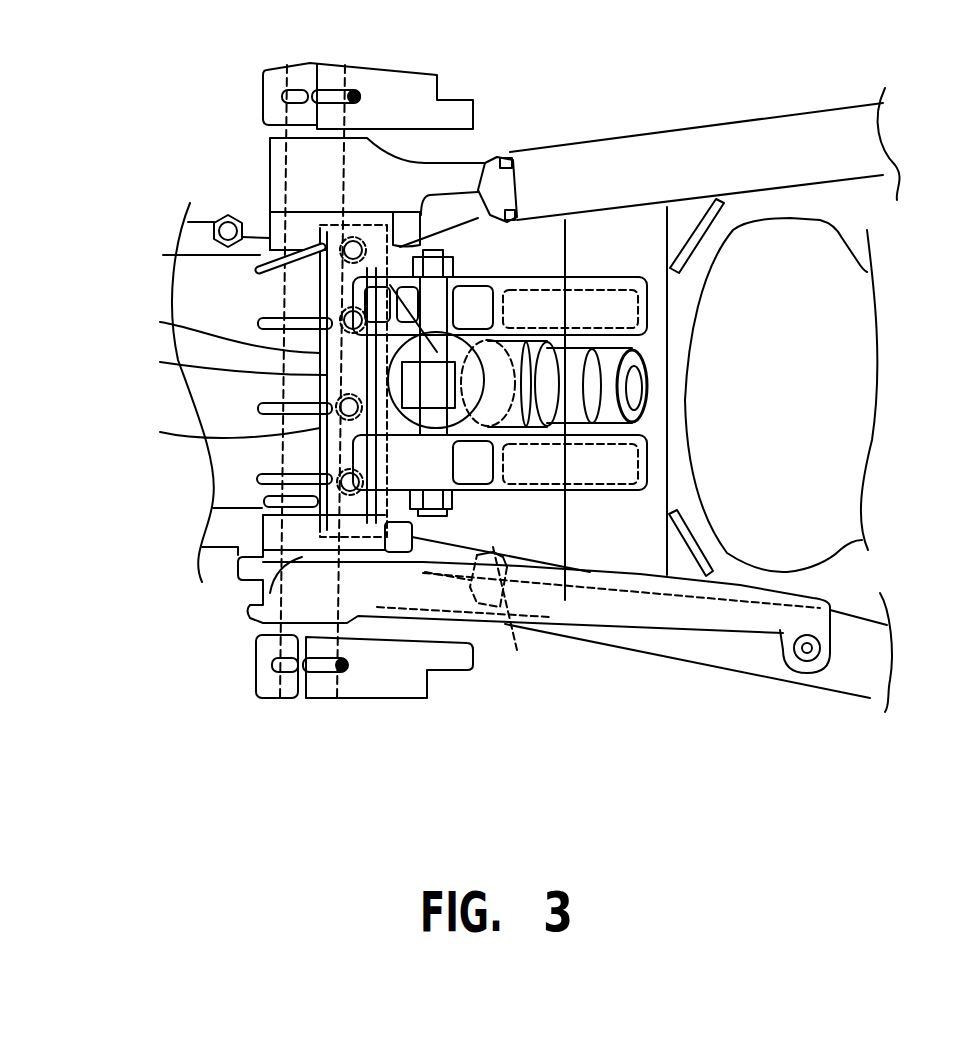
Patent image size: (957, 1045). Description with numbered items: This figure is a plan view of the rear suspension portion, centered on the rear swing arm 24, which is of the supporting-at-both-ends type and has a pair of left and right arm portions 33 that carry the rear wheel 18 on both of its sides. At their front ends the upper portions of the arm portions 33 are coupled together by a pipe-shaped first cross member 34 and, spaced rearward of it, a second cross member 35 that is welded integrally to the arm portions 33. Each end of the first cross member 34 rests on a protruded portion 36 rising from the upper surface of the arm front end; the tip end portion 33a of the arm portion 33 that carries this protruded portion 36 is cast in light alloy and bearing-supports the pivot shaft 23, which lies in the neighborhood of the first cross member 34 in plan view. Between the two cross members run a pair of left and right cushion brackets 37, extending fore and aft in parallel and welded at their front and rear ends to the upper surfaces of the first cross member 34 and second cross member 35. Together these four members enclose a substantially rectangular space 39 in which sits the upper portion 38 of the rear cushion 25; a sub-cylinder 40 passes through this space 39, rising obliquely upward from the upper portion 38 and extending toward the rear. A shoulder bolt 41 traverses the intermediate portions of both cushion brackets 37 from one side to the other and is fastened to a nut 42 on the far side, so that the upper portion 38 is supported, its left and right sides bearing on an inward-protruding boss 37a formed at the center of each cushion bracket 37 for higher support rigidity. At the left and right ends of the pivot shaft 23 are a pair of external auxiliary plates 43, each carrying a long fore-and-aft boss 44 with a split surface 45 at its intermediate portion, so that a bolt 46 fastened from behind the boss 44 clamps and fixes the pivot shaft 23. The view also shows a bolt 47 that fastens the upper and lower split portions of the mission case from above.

The rear wheel 18 is at (850, 304).
The pivot shaft 23 is at (277, 683).
The rear swing arm 24 is at (705, 113).
The rear cushion 25 is at (483, 380).
The arm portions 33 is at (636, 155).
The tip end portion 33a is at (270, 150).
The first cross member 34 is at (330, 373).
The second cross member 35 is at (653, 440).
The protruded portion 36 is at (303, 213).
The cushion brackets 37 is at (485, 292).
The boss 37a is at (400, 253).
The upper portion 38 is at (408, 398).
The space 39 is at (388, 342).
The sub-cylinder 40 is at (657, 383).
The shoulder bolt 41 is at (428, 513).
The nut 42 is at (437, 253).
The external auxiliary plates 43 is at (268, 78).
The boss 44 is at (333, 90).
The split surface 45 is at (312, 65).
The bolt 46 is at (377, 102).
The bolt 47 is at (340, 312).